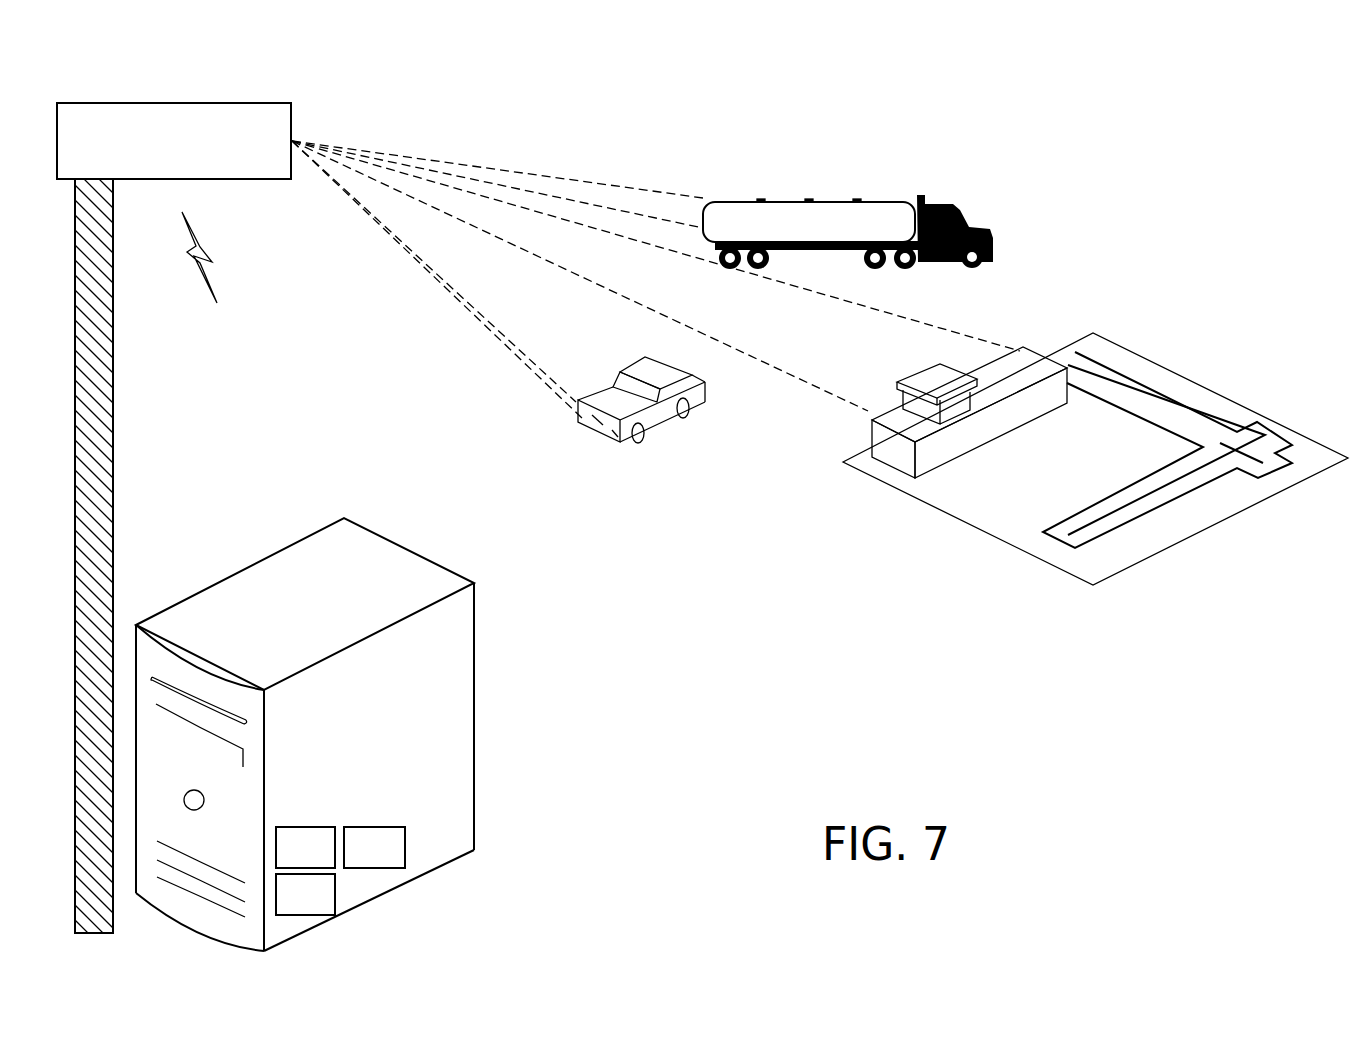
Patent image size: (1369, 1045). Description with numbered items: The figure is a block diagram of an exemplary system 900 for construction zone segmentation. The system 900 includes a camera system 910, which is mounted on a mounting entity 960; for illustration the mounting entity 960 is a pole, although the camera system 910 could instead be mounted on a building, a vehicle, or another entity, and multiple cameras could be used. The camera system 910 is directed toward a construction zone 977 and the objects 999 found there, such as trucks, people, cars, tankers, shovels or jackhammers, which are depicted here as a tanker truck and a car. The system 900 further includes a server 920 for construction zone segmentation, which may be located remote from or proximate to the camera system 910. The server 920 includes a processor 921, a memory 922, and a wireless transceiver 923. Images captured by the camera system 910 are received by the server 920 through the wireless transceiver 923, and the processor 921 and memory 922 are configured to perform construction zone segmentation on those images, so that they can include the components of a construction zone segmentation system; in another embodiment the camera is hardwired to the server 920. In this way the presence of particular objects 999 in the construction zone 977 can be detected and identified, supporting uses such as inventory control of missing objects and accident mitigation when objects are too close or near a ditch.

The system for construction zone segmentation 900 is at (830, 60).
The camera system 910 is at (150, 170).
The server 920 is at (260, 640).
The processor 921 is at (328, 864).
The memory 922 is at (328, 910).
The wireless transceiver 923 is at (352, 864).
The mounting entity 960 is at (128, 425).
The construction zone 977 is at (1186, 358).
The objects 999 is at (868, 292).